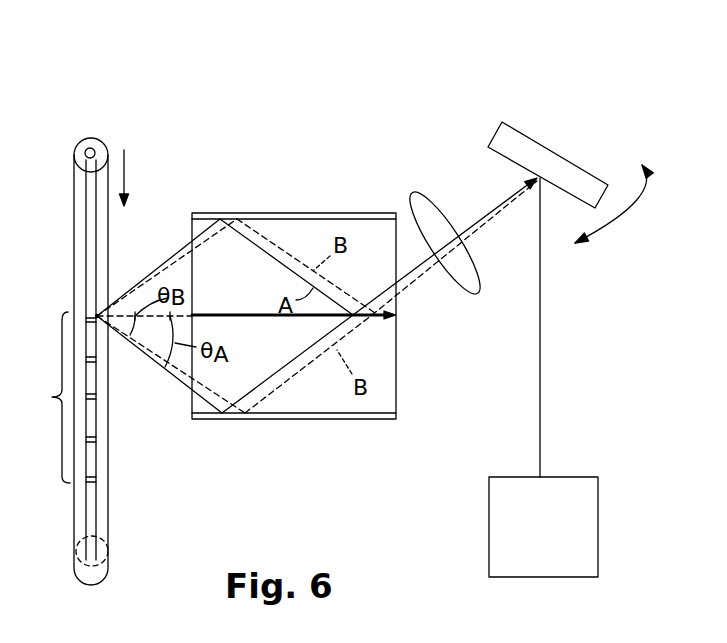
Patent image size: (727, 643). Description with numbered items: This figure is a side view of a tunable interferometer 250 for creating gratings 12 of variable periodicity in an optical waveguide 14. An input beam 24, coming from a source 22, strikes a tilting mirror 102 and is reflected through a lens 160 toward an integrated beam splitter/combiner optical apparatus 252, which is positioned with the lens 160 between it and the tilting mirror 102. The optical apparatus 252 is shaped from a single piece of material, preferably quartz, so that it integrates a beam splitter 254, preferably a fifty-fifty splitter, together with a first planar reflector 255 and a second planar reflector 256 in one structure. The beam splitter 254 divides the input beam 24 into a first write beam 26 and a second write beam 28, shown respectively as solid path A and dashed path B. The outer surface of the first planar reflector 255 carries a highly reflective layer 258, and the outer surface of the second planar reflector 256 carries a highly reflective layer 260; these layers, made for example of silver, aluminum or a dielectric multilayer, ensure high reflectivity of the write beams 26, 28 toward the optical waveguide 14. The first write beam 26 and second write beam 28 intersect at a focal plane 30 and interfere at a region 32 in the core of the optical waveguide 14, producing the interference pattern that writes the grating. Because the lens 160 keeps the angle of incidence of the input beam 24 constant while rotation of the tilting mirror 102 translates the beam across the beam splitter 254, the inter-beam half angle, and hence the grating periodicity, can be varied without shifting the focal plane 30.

The gratings 12 is at (57, 397).
The optical waveguide 14 is at (73, 195).
The light source 22 is at (535, 578).
The input beam 24 is at (540, 363).
The first write beam 26 is at (278, 262).
The second write beam 28 is at (287, 365).
The focal plane 30 is at (103, 330).
The region 32 is at (95, 311).
The tilting mirror 102 is at (555, 148).
The lens 160 is at (440, 210).
The tunable interferometer 250 is at (408, 113).
The integrated beam splitter/combiner optical apparatus 252 is at (407, 380).
The beam splitter 254 is at (372, 317).
The first planar reflector 255 is at (257, 218).
The second planar reflector 256 is at (270, 415).
The highly reflective layer 258 is at (308, 212).
The highly reflective layer 260 is at (328, 420).